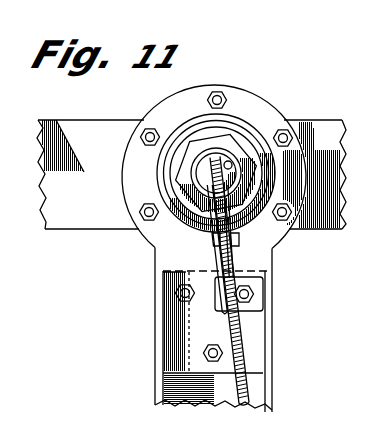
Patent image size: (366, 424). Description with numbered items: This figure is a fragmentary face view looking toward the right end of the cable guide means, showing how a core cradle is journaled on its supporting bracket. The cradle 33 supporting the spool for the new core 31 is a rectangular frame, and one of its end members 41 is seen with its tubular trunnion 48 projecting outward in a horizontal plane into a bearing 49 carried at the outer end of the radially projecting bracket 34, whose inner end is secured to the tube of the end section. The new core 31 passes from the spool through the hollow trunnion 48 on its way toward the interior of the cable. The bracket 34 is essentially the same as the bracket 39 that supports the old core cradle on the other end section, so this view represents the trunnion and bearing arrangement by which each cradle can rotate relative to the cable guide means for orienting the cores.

The new core 31 is at (238, 338).
The cradle 33 is at (117, 230).
The bracket 34 is at (140, 423).
The bracket 39 is at (23, 174).
The end member 41 is at (78, 207).
The tubular trunnion 48 is at (230, 162).
The bearing 49 is at (178, 131).